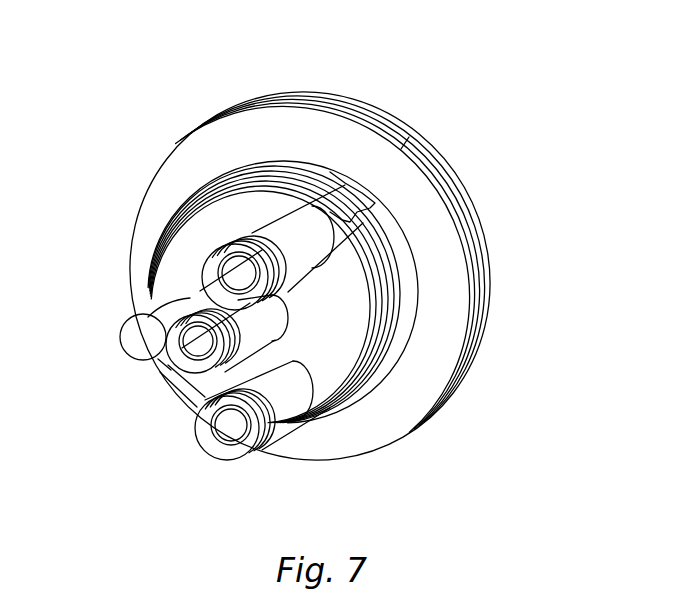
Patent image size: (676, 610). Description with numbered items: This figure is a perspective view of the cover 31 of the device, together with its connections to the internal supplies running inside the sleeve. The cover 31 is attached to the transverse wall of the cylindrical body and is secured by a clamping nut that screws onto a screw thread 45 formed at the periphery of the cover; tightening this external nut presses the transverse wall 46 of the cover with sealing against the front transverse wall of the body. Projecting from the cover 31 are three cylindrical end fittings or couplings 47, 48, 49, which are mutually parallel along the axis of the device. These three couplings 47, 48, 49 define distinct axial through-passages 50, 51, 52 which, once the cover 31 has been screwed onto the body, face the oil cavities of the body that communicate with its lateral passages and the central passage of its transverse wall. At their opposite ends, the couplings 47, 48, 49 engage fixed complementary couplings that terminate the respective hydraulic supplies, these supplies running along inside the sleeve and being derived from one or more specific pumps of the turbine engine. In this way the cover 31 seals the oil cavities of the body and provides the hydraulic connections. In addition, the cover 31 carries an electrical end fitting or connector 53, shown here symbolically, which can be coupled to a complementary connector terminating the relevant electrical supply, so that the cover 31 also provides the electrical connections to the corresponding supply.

The cover 31 is at (138, 171).
The screw thread 45 is at (376, 108).
The transverse wall 46 is at (307, 140).
The cylindrical coupling 47 is at (300, 258).
The cylindrical coupling 48 is at (281, 402).
The cylindrical coupling 49 is at (272, 327).
The axial through-passage 50 is at (237, 266).
The axial through-passage 51 is at (210, 428).
The axial through-passage 52 is at (166, 378).
The electrical connector 53 is at (145, 340).